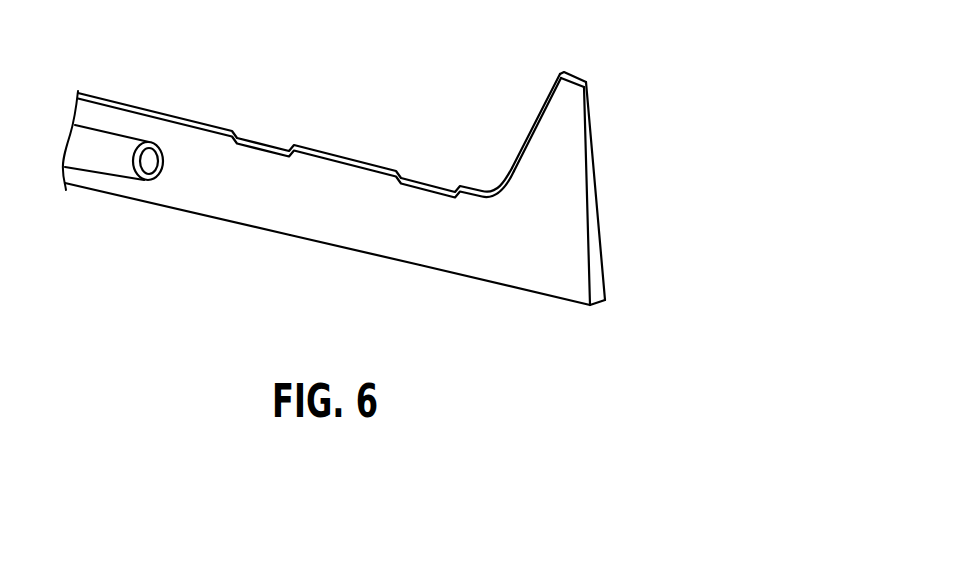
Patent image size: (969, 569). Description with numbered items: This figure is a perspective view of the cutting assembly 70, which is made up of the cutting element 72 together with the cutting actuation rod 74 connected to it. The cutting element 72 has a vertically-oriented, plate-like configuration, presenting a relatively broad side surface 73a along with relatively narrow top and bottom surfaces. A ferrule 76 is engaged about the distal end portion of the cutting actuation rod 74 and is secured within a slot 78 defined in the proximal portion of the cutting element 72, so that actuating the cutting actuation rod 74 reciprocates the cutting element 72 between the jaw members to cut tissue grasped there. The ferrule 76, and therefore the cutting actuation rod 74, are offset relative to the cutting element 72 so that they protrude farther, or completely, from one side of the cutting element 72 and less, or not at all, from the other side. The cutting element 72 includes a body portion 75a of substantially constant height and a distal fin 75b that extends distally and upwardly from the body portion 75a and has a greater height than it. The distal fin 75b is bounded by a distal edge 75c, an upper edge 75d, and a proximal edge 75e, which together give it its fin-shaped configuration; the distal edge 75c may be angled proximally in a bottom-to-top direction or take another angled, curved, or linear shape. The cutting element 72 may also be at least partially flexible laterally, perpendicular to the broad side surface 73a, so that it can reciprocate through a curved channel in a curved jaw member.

The cutting assembly 70 is at (278, 105).
The cutting element 72 is at (378, 237).
The broad side surface 73a is at (472, 257).
The cutting actuation rod 74 is at (150, 163).
The body portion 75a is at (263, 210).
The distal fin 75b is at (568, 180).
The distal edge 75c is at (610, 270).
The upper edge 75d is at (578, 71).
The proximal edge 75e is at (539, 100).
The ferrule 76 is at (102, 162).
The slot 78 is at (118, 127).